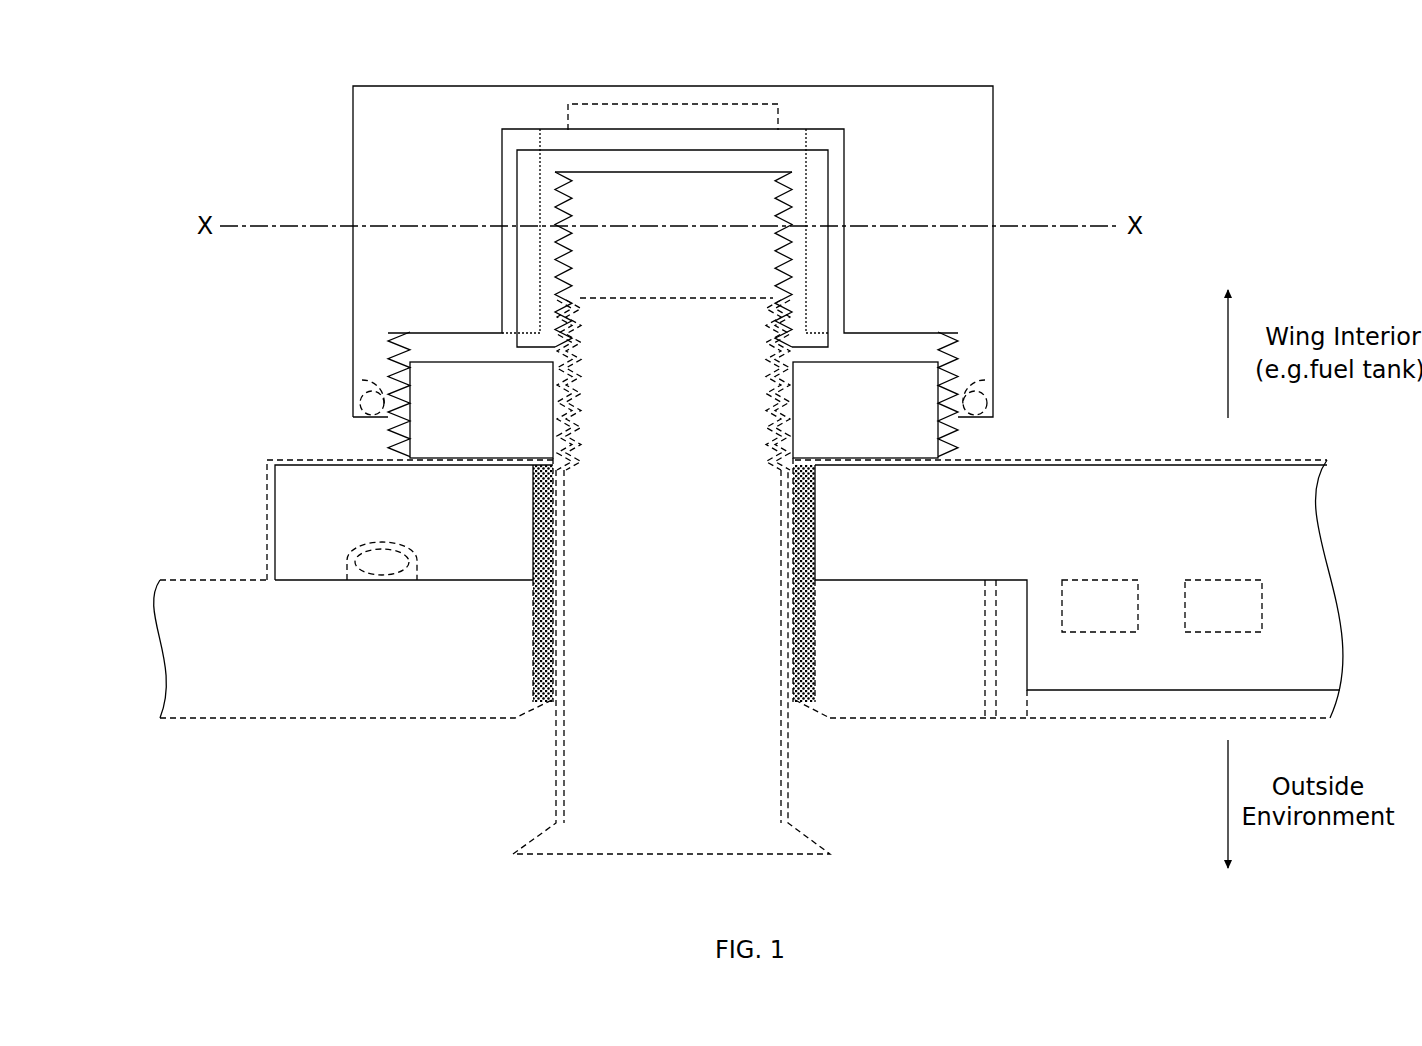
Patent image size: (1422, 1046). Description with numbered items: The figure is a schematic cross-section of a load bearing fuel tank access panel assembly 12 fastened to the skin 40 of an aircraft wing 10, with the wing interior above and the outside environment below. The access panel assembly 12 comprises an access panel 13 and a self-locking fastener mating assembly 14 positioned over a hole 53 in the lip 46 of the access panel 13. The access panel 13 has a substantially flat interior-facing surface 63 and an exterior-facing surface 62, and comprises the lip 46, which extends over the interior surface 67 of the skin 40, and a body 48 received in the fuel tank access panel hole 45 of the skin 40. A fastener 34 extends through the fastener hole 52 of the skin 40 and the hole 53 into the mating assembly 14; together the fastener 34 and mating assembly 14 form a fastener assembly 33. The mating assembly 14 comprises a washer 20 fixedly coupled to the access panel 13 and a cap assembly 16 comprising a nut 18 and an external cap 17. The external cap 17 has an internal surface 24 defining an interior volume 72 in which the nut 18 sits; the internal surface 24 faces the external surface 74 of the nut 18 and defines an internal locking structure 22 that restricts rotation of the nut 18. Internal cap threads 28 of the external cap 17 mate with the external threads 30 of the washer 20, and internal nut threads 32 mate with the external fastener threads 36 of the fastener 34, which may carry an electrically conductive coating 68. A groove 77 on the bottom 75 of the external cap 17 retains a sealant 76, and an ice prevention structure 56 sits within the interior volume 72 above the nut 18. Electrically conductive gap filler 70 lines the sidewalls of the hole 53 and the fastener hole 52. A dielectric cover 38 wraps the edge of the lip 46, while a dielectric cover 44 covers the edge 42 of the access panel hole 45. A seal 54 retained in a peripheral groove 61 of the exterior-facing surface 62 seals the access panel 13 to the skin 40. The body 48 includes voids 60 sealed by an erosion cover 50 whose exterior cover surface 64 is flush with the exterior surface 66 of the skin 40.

The aircraft wing 10 is at (102, 104).
The fuel tank access panel assembly 12 is at (165, 183).
The access panel 13 is at (237, 509).
The self-locking fastener mating assembly 14 is at (285, 300).
The cap assembly 16 is at (340, 142).
The external cap 17 is at (338, 210).
The nut 18 is at (501, 183).
The washer 20 is at (476, 360).
The internal locking structure 22 is at (541, 140).
The internal surface 24 is at (843, 203).
The internal cap threads 28 is at (400, 358).
The external threads 30 is at (400, 425).
The internal nut threads 32 is at (572, 215).
The fastener assembly 33 is at (425, 838).
The fastener 34 is at (505, 855).
The external fastener threads 36 is at (740, 300).
The dielectric cover 38 is at (267, 478).
The skin 40 is at (898, 732).
The edge 42 is at (997, 645).
The dielectric cover 44 is at (998, 720).
The fuel tank access panel hole 45 is at (1010, 690).
The lip 46 is at (250, 540).
The body 48 is at (1010, 612).
The erosion cover 50 is at (1065, 722).
The fastener hole 52 is at (555, 702).
The hole 53 is at (553, 582).
The seal 54 is at (362, 545).
The ice prevention structure 56 is at (666, 103).
The voids 60 is at (1142, 605).
The peripheral groove 61 is at (405, 545).
The exterior-facing surface 62 is at (325, 583).
The interior-facing surface 63 is at (293, 462).
The exterior cover surface 64 is at (1205, 720).
The exterior surface 66 is at (870, 722).
The interior surface 67 is at (893, 580).
The electrically conductive coating 68 is at (660, 298).
The electrically conductive gap filler 70 is at (543, 528).
The interior volume 72 is at (833, 130).
The external surface 74 is at (516, 217).
The bottom 75 is at (372, 422).
The sealant 76 is at (362, 395).
The groove 77 is at (380, 408).